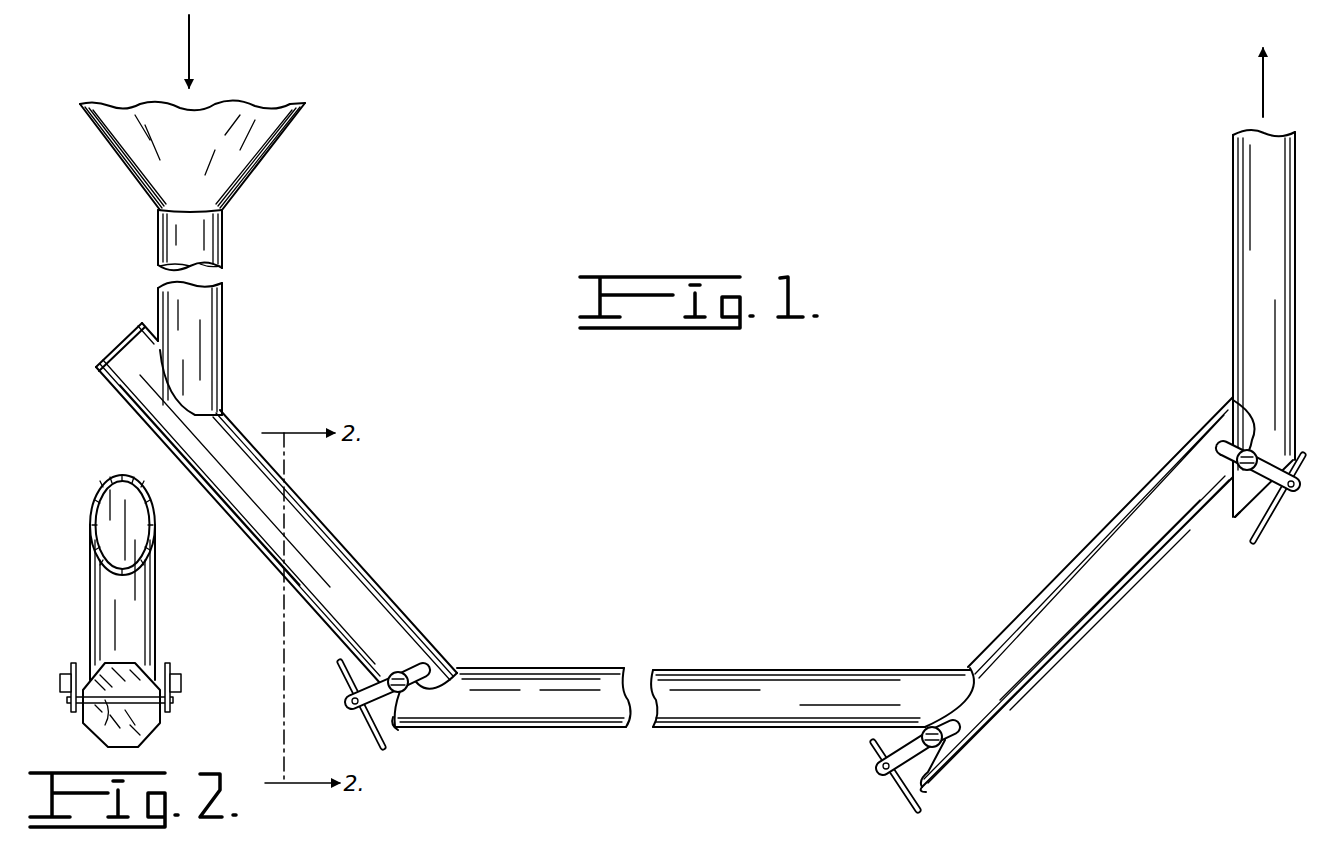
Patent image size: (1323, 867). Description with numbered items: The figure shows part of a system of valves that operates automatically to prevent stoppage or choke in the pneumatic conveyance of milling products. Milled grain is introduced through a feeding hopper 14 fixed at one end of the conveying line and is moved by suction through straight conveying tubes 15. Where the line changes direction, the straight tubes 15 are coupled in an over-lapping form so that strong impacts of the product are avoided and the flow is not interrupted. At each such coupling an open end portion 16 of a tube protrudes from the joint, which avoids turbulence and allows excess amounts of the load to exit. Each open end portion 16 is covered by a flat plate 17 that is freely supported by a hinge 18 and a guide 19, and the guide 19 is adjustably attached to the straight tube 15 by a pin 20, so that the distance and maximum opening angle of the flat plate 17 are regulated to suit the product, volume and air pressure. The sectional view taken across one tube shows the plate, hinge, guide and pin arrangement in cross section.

In FIG. 1, the feeding hopper 14 is at (245, 162).
In FIG. 1, the straight conveying tubes 15 is at (335, 552).
In FIG. 2, the straight conveying tubes 15 is at (148, 573).
In FIG. 1, the open end portion 16 is at (397, 722).
In FIG. 1, the flat plate 17 is at (375, 733).
In FIG. 2, the flat plate 17 is at (140, 735).
In FIG. 1, the hinge 18 is at (348, 699).
In FIG. 2, the hinge 18 is at (110, 703).
In FIG. 1, the guide 19 is at (430, 672).
In FIG. 2, the guide 19 is at (75, 665).
In FIG. 1, the pin 20 is at (410, 672).
In FIG. 2, the pin 20 is at (181, 684).